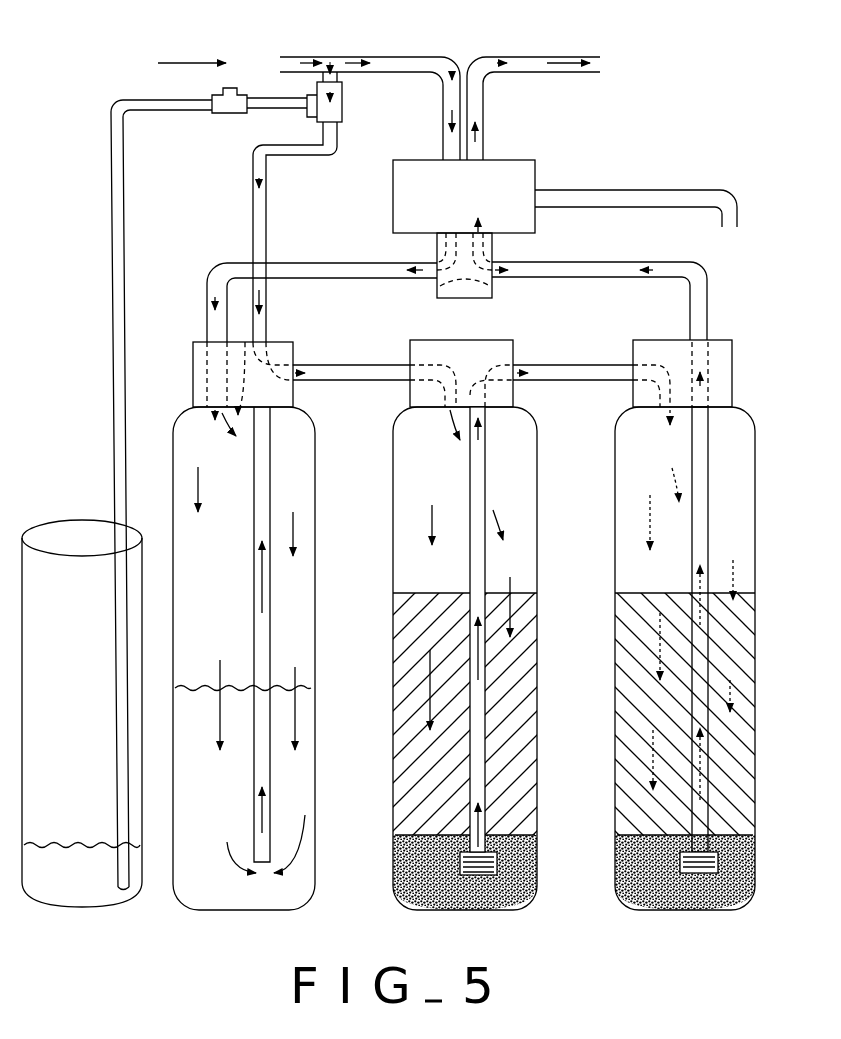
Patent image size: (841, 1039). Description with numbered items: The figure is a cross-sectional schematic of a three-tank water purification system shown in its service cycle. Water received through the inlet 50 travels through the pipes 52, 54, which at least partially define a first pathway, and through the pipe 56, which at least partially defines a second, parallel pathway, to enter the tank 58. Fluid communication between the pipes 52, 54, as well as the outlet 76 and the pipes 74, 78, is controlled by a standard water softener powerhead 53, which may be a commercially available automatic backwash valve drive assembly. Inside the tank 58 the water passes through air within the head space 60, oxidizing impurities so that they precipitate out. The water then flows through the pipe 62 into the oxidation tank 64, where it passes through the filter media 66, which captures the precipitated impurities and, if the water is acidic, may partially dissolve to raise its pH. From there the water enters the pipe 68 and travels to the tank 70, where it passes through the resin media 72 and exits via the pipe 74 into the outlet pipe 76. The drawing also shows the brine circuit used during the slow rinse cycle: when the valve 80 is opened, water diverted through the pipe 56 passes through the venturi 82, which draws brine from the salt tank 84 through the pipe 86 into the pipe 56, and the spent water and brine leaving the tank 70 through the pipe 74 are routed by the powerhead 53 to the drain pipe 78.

The inlet 50 is at (280, 62).
The pipe 52 is at (442, 56).
The powerhead 53 is at (518, 167).
The pipe 54 is at (217, 266).
The pipe 56 is at (254, 194).
The tank 58 is at (173, 423).
The head space 60 is at (300, 477).
The pipe 62 is at (353, 370).
The oxidation tank 64 is at (393, 434).
The filter media 66 is at (398, 861).
The pipe 68 is at (585, 373).
The tank 70 is at (617, 434).
The resin media 72 is at (618, 861).
The pipe 74 is at (572, 268).
The outlet pipe 76 is at (580, 72).
The drain pipe 78 is at (678, 192).
The valve 80 is at (222, 113).
The venturi 82 is at (341, 114).
The salt tank 84 is at (90, 560).
The pipe 86 is at (117, 336).